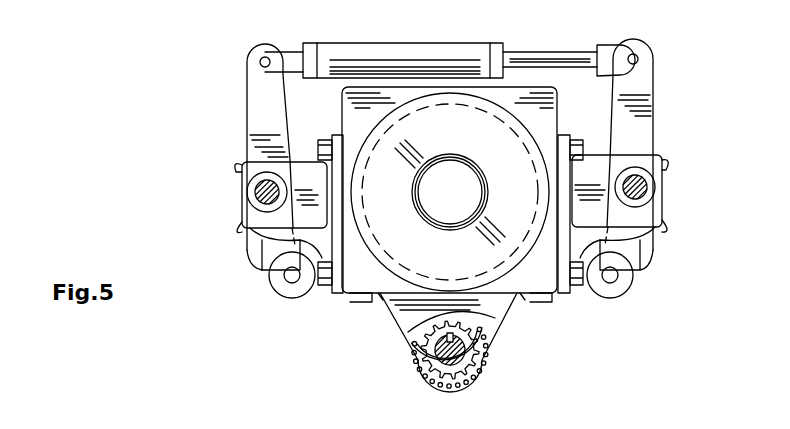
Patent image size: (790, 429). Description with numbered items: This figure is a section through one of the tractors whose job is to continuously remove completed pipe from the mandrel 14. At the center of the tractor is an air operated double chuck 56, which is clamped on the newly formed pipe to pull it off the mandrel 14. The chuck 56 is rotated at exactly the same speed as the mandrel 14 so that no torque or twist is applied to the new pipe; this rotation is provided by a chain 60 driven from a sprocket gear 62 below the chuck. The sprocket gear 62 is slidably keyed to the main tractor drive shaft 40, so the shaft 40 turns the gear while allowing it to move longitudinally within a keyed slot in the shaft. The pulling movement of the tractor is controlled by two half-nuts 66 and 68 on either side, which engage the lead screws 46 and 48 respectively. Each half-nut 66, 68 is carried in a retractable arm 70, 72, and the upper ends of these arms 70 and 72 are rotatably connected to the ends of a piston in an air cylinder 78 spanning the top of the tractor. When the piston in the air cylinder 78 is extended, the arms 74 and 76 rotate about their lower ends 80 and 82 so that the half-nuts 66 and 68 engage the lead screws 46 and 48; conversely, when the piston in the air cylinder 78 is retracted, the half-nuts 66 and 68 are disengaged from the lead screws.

The mandrel 14 is at (464, 204).
The main tractor drive shaft 40 is at (457, 351).
The lead screw 46 is at (647, 186).
The lead screw 48 is at (265, 198).
The air operated double chuck 56 is at (506, 153).
The chain 60 is at (493, 316).
The sprocket gear 62 is at (428, 350).
The half-nut 66 is at (664, 172).
The half-nut 68 is at (238, 173).
The retractable arm 70 is at (255, 98).
The retractable arm 72 is at (648, 88).
The arm 74 is at (256, 48).
The arm 76 is at (638, 47).
The air cylinder 78 is at (438, 48).
The lower end of arm 80 is at (258, 268).
The lower end of arm 82 is at (640, 268).